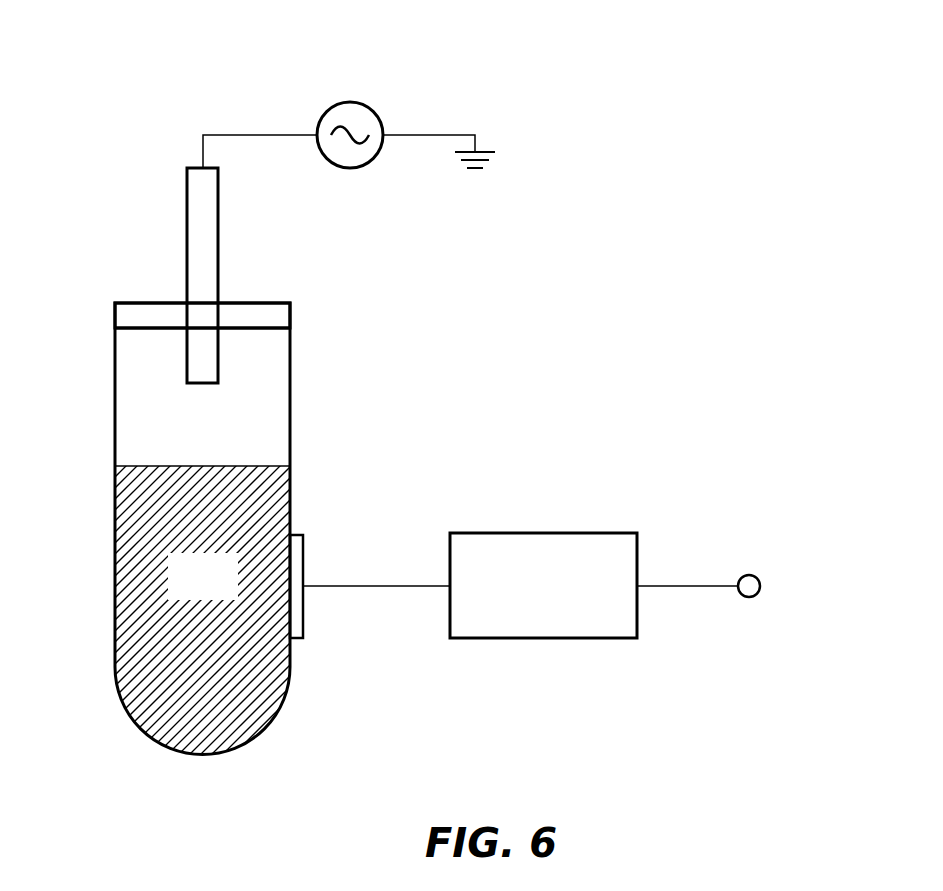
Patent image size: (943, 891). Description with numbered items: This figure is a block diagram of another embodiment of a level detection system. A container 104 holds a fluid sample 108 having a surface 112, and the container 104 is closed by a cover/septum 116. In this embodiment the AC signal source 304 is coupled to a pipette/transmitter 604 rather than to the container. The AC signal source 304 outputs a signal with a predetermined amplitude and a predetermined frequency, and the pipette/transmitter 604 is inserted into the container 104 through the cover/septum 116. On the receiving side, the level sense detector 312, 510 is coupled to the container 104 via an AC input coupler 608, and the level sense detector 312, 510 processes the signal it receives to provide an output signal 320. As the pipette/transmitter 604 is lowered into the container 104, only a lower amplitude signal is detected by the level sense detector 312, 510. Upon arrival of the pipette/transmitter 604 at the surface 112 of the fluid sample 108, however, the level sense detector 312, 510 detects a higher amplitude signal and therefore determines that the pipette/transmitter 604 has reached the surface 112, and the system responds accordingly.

The container 104 is at (115, 617).
The fluid sample 108 is at (228, 588).
The surface 112 is at (166, 466).
The cover/septum 116 is at (290, 316).
The AC signal source 304 is at (365, 105).
The level sense detector 312 is at (579, 552).
The LSD 510 is at (542, 533).
The output signal 320 is at (750, 575).
The pipette/transmitter 604 is at (187, 200).
The AC input coupler 608 is at (355, 586).